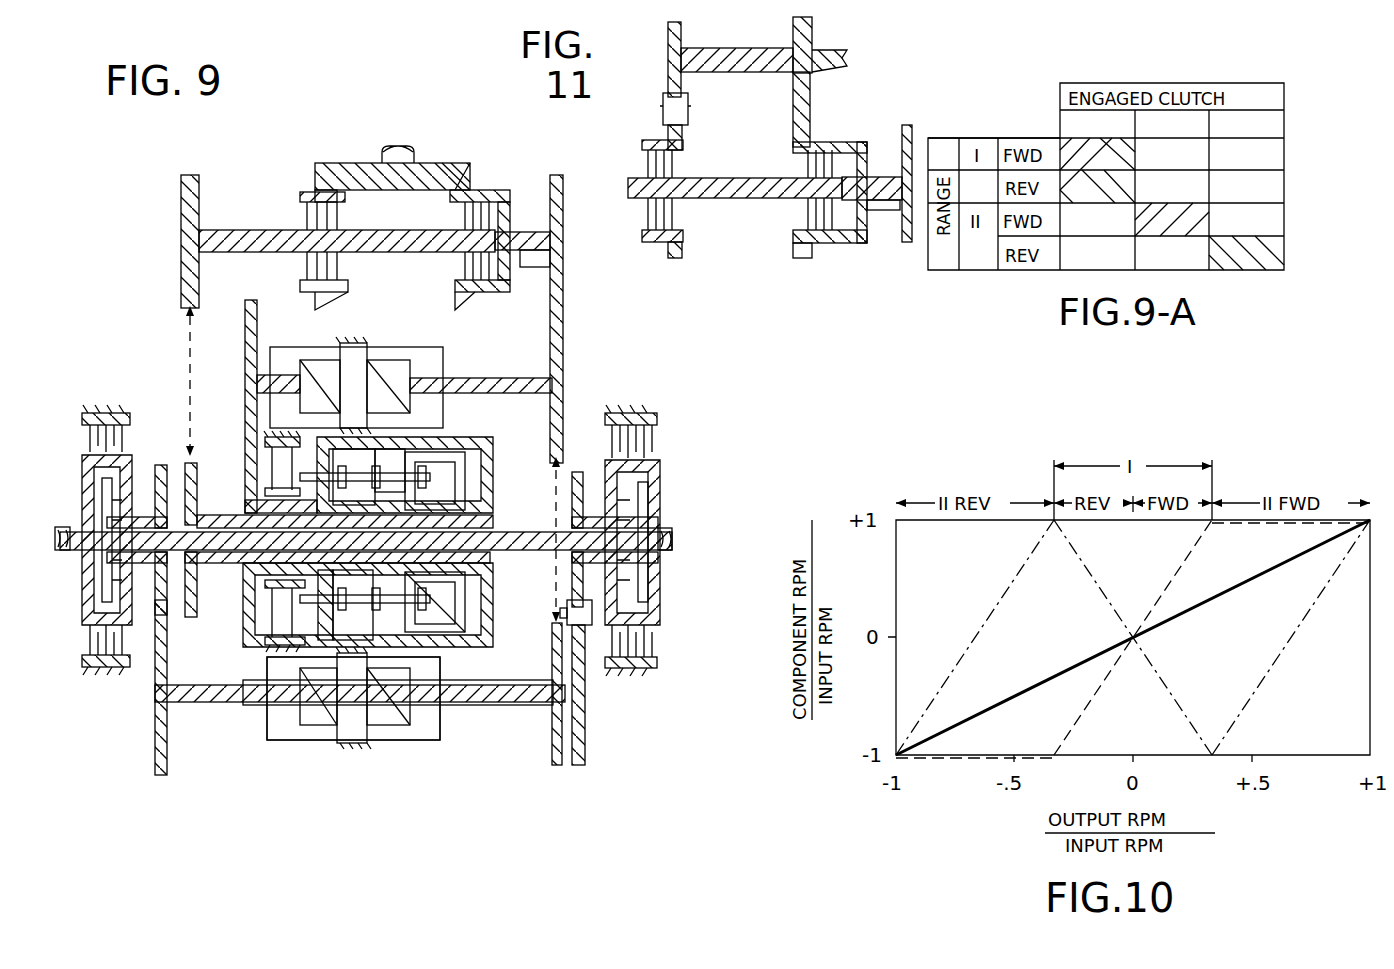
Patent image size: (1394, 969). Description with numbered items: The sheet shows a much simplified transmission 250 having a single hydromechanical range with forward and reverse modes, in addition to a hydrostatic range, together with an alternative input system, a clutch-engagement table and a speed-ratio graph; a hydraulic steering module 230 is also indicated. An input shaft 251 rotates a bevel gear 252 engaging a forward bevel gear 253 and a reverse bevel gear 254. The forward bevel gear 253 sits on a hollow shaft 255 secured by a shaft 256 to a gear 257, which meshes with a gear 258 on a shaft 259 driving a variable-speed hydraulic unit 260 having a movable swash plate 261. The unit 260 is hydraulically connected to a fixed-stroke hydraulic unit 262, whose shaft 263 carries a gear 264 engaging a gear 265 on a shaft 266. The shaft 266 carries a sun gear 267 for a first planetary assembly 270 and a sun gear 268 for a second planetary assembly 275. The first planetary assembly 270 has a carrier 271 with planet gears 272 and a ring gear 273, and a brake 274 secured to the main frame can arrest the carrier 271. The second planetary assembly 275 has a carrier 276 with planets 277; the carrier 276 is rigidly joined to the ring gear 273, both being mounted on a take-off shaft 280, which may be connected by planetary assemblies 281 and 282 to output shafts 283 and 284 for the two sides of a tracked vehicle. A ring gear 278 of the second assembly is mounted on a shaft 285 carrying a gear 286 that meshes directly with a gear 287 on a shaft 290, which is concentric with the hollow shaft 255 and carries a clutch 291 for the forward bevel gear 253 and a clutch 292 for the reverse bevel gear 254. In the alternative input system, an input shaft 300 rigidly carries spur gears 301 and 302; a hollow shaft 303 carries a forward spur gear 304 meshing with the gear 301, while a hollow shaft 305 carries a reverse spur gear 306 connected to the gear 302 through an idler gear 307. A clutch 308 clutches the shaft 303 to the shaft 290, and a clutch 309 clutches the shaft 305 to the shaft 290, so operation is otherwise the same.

In FIG. 9, the hydraulic steering module 230 is at (388, 748).
In FIG. 9, the transmission 250 is at (360, 150).
In FIG. 9, the input shaft 251 is at (412, 146).
In FIG. 9, the bevel gear 252 is at (455, 162).
In FIG. 9, the forward bevel gear 253 is at (473, 175).
In FIG. 9, the reverse bevel gear 254 is at (307, 180).
In FIG. 9, the hollow shaft 255 is at (498, 194).
In FIG. 9, the shaft 256 is at (546, 252).
In FIG. 11, the shaft 256 is at (878, 210).
In FIG. 9, the gear 257 is at (563, 213).
In FIG. 11, the gear 257 is at (906, 125).
In FIG. 9, the gear 258 is at (563, 360).
In FIG. 9, the shaft 259 is at (479, 378).
In FIG. 9, the variable-speed hydraulic unit 260 is at (382, 350).
In FIG. 9, the movable swash plate 261 is at (428, 355).
In FIG. 9, the fixed-stroke hydraulic unit 262 is at (324, 355).
In FIG. 9, the shaft 263 is at (257, 375).
In FIG. 9, the gear 264 is at (257, 386).
In FIG. 9, the gear 265 is at (258, 497).
In FIG. 10, the gear 265 is at (1012, 584).
In FIG. 9, the shaft 266 is at (186, 470).
In FIG. 9, the sun gear 267 is at (288, 581).
In FIG. 10, the sun gear 267 is at (1054, 600).
In FIG. 9, the sun gear 268 is at (430, 576).
In FIG. 10, the sun gear 268 is at (1094, 586).
In FIG. 9, the first planetary assembly 270 is at (303, 456).
In FIG. 9, the carrier 271 is at (295, 589).
In FIG. 9, the planet gears 272 is at (293, 606).
In FIG. 9, the ring gear 273 is at (310, 647).
In FIG. 10, the ring gear 273 is at (1012, 653).
In FIG. 9, the brake 274 is at (291, 620).
In FIG. 9A, the brake 274 is at (1097, 125).
In FIG. 9, the second planetary assembly 275 is at (426, 458).
In FIG. 9, the carrier 276 is at (435, 650).
In FIG. 9, the planets 277 is at (430, 604).
In FIG. 9, the ring gear 278 is at (443, 622).
In FIG. 10, the ring gear 278 is at (1094, 698).
In FIG. 9, the take-off shaft 280 is at (554, 522).
In FIG. 10, the take-off shaft 280 is at (1024, 692).
In FIG. 9, the planetary assembly 281 is at (80, 450).
In FIG. 9, the planetary assembly 282 is at (664, 450).
In FIG. 9, the output shaft 283 is at (66, 512).
In FIG. 9, the output shaft 284 is at (670, 528).
In FIG. 9, the shaft 285 is at (317, 512).
In FIG. 9, the gear 286 is at (190, 453).
In FIG. 10, the gear 286 is at (1127, 723).
In FIG. 9, the gear 287 is at (180, 272).
In FIG. 9, the shaft 290 is at (206, 232).
In FIG. 11, the shaft 290 is at (765, 178).
In FIG. 9, the clutch 291 is at (466, 222).
In FIG. 9A, the clutch 291 is at (1172, 125).
In FIG. 9, the clutch 292 is at (312, 222).
In FIG. 9A, the clutch 292 is at (1245, 125).
In FIG. 11, the input shaft 300 is at (843, 66).
In FIG. 11, the spur gear 301 is at (812, 32).
In FIG. 11, the spur gear 302 is at (668, 43).
In FIG. 11, the hollow shaft 303 is at (793, 145).
In FIG. 11, the forward spur gear 304 is at (793, 118).
In FIG. 11, the hollow shaft 305 is at (655, 138).
In FIG. 11, the reverse spur gear 306 is at (683, 140).
In FIG. 11, the idler gear 307 is at (663, 110).
In FIG. 11, the clutch 308 is at (812, 228).
In FIG. 11, the clutch 309 is at (664, 228).